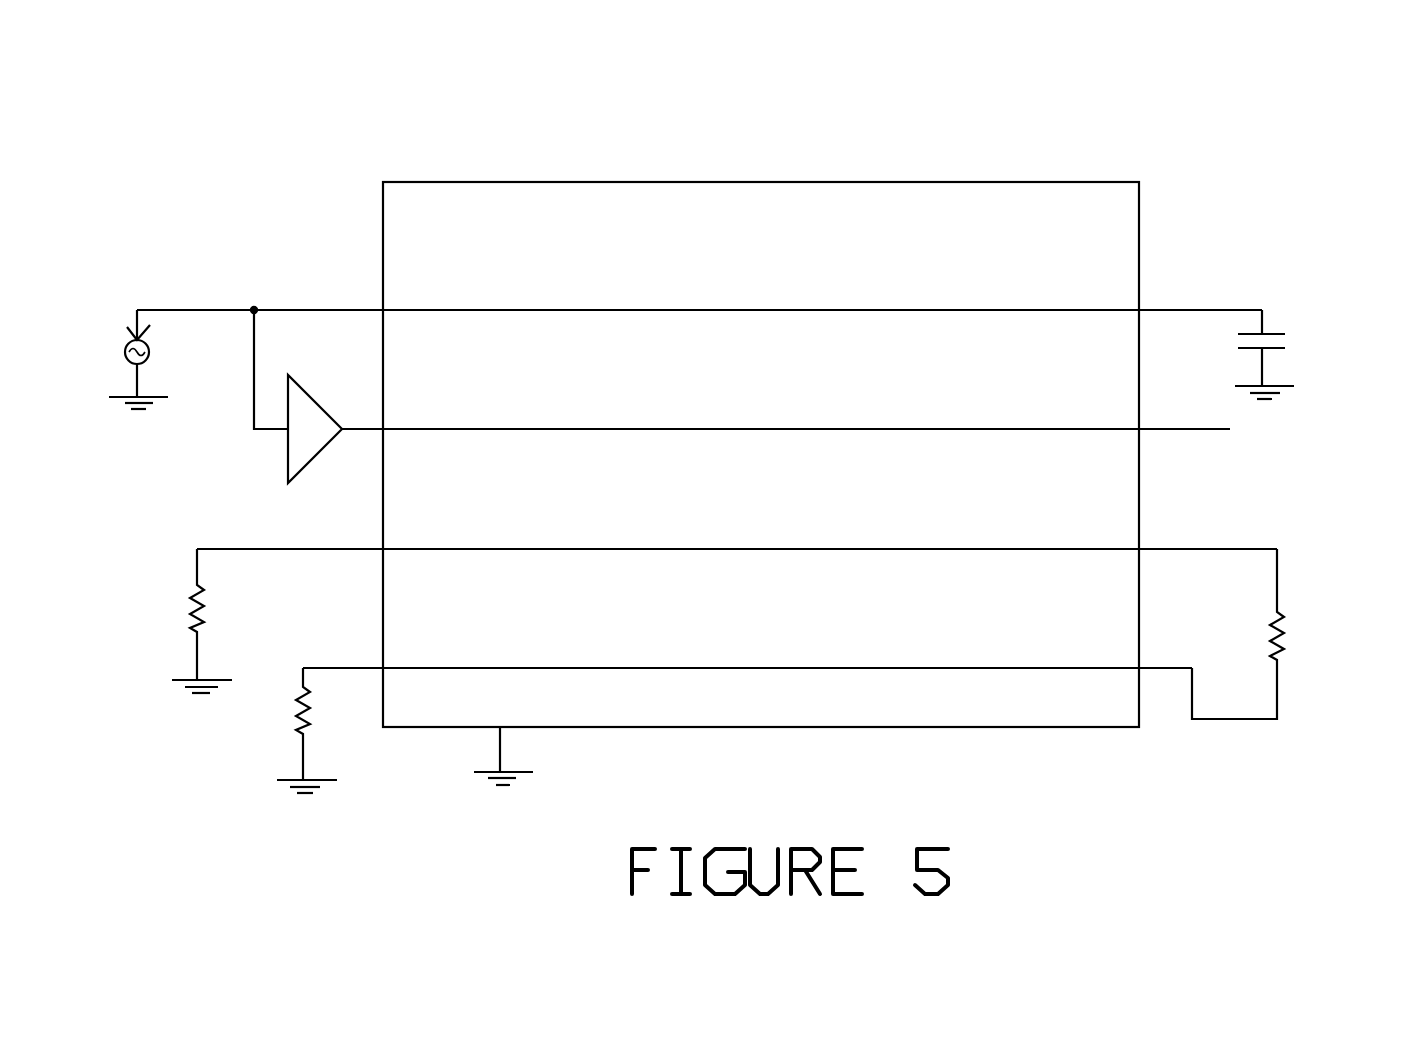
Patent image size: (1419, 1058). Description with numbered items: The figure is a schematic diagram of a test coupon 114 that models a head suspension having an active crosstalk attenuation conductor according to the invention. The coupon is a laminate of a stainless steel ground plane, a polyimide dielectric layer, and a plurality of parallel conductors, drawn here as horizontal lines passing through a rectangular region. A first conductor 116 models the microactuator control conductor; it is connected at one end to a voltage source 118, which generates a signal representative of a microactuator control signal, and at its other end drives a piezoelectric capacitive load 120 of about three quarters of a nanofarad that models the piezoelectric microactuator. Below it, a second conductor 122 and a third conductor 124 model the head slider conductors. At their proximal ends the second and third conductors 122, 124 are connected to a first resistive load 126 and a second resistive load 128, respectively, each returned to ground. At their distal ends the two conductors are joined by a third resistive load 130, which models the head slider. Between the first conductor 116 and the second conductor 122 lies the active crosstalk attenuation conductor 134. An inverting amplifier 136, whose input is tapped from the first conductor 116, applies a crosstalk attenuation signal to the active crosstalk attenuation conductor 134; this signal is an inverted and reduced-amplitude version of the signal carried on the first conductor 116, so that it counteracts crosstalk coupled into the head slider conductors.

The test coupon 114 is at (997, 182).
The first conductor 116 is at (623, 310).
The voltage source 118 is at (123, 345).
The piezoelectric capacitive load 120 is at (1268, 328).
The second conductor 122 is at (718, 549).
The third conductor 124 is at (782, 668).
The first resistive load 126 is at (195, 612).
The second resistive load 128 is at (315, 720).
The third resistive load 130 is at (1290, 653).
The active crosstalk attenuation conductor 134 is at (703, 429).
The inverting amplifier 136 is at (313, 397).